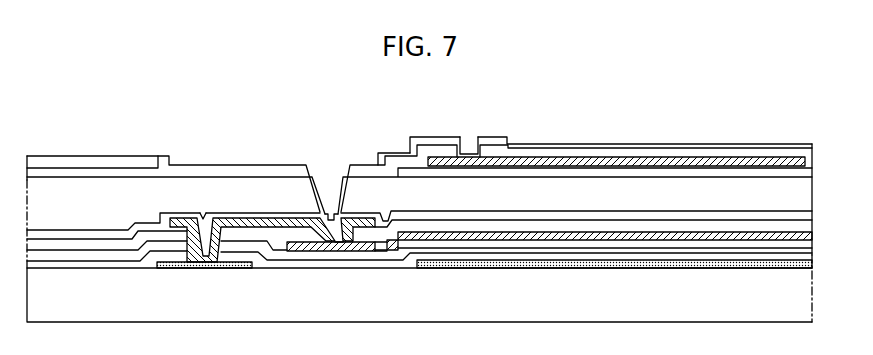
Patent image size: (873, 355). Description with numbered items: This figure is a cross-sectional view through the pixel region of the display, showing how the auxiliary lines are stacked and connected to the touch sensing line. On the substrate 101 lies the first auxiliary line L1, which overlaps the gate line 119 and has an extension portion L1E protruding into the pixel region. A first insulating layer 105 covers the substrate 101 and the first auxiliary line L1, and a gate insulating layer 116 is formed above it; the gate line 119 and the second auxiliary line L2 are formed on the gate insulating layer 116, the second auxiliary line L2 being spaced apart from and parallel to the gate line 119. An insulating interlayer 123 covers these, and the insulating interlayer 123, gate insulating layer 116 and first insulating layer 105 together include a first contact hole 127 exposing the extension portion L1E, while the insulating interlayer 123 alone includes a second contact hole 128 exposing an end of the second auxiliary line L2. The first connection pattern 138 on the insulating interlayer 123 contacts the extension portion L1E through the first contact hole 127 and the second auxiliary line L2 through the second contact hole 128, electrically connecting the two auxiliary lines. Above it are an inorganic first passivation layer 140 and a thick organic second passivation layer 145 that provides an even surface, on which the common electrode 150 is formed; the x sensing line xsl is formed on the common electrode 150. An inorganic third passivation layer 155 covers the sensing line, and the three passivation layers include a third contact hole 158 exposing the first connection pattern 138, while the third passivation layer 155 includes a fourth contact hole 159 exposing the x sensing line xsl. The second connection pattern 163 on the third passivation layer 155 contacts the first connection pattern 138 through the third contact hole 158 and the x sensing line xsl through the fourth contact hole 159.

The substrate 101 is at (806, 309).
The first insulating layer 105 is at (518, 256).
The gate insulating layer 116 is at (545, 244).
The gate line 119 is at (585, 241).
The insulating interlayer 123 is at (615, 226).
The first contact hole 127 is at (205, 243).
The second contact hole 128 is at (329, 233).
The first connection pattern 138 is at (177, 219).
The first passivation layer 140 is at (658, 216).
The second passivation layer 145 is at (700, 208).
The common electrode 150 is at (65, 172).
The third passivation layer 155 is at (101, 158).
The third contact hole 158 is at (331, 209).
The fourth contact hole 159 is at (469, 148).
The second connection pattern 163 is at (435, 137).
The x sensing line xsl is at (673, 157).
The first auxiliary line L1 is at (440, 269).
The extension portion L1E is at (234, 269).
The second auxiliary line L2 is at (328, 252).